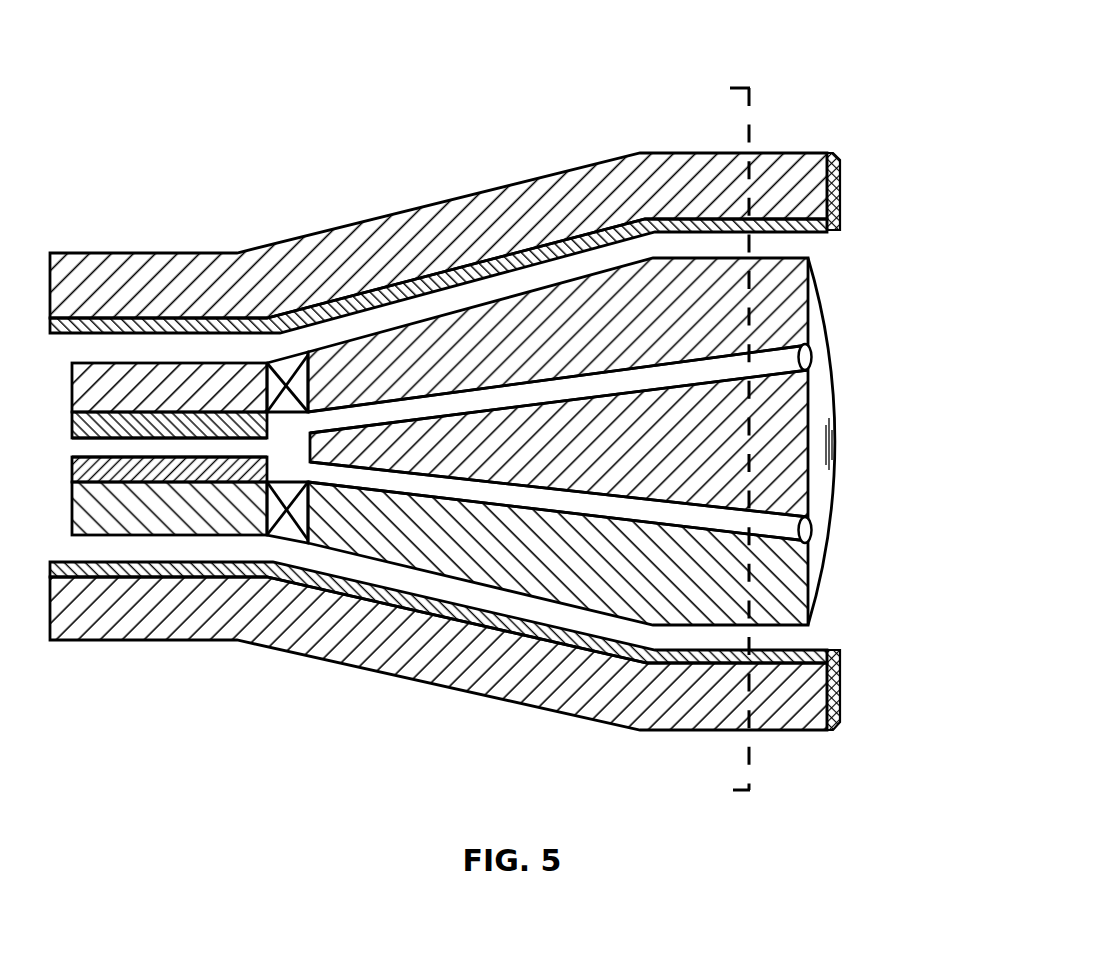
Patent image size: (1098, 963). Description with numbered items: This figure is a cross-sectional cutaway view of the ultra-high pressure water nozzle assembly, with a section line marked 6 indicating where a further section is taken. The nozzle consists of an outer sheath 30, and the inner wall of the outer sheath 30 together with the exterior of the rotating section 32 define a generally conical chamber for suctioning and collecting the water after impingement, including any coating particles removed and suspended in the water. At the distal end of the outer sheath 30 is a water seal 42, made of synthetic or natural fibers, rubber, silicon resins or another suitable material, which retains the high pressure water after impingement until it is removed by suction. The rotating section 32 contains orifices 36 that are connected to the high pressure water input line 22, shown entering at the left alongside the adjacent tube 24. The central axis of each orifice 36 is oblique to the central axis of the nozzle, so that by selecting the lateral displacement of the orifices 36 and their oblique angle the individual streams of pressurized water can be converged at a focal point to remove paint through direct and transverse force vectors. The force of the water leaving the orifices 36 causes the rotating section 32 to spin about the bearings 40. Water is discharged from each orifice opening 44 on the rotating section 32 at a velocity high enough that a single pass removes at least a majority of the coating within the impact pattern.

The high pressure water input line 22 is at (169, 447).
The inner tube 24 is at (183, 350).
The outer sheath 30 is at (117, 252).
The rotating section 32 is at (482, 303).
The orifices 36 is at (580, 388).
The bearings 40 is at (285, 528).
The water seal 42 is at (838, 166).
The orifice opening 44 is at (812, 528).
The section line 6- 6 is at (713, 791).